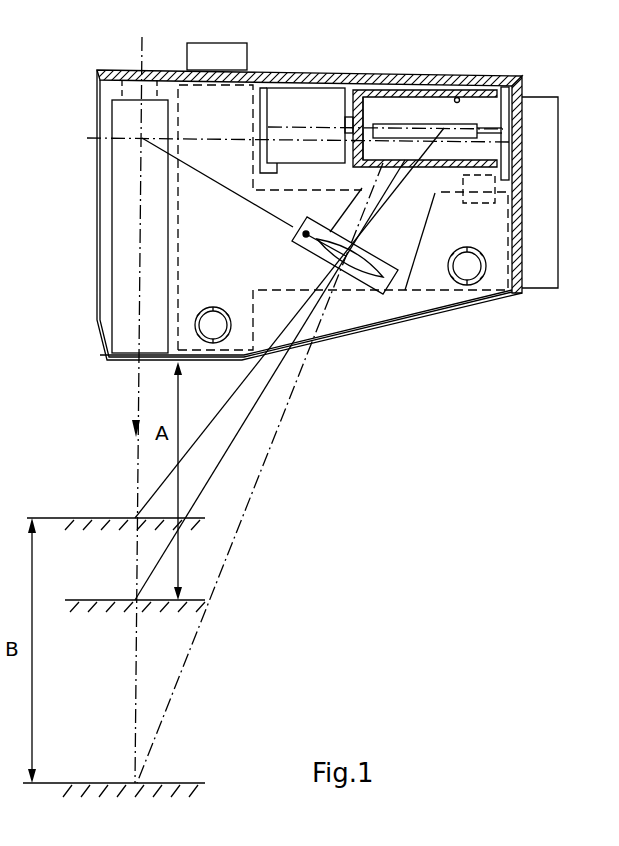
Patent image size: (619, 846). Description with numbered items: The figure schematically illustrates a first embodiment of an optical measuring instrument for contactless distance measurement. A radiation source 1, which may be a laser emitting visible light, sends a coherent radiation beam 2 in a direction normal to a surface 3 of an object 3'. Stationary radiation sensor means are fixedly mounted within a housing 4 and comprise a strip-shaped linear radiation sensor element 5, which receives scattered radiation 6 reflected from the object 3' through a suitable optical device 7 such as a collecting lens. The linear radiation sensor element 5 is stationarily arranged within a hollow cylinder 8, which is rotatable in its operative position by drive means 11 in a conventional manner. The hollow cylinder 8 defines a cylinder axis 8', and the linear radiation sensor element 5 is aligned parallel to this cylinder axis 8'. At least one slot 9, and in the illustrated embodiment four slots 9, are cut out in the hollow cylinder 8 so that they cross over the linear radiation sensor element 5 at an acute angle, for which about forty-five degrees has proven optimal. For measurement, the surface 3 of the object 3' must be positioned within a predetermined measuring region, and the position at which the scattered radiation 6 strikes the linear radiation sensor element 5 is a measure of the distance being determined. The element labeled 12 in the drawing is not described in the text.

The radiation source 1 is at (123, 252).
The coherent radiation beam 2 is at (135, 458).
The surface 3 is at (116, 533).
The object 3' is at (135, 640).
The housing 4 is at (97, 110).
The strip-shaped linear radiation sensor element 5 is at (444, 128).
The scattered radiation 6 is at (260, 405).
The optical device 7 is at (383, 294).
The hollow cylinder 8 is at (425, 89).
The cylinder axis 8' is at (437, 74).
The slot 9 is at (417, 92).
The drive means 11 is at (298, 100).
The evaluation circuit 12 is at (198, 100).